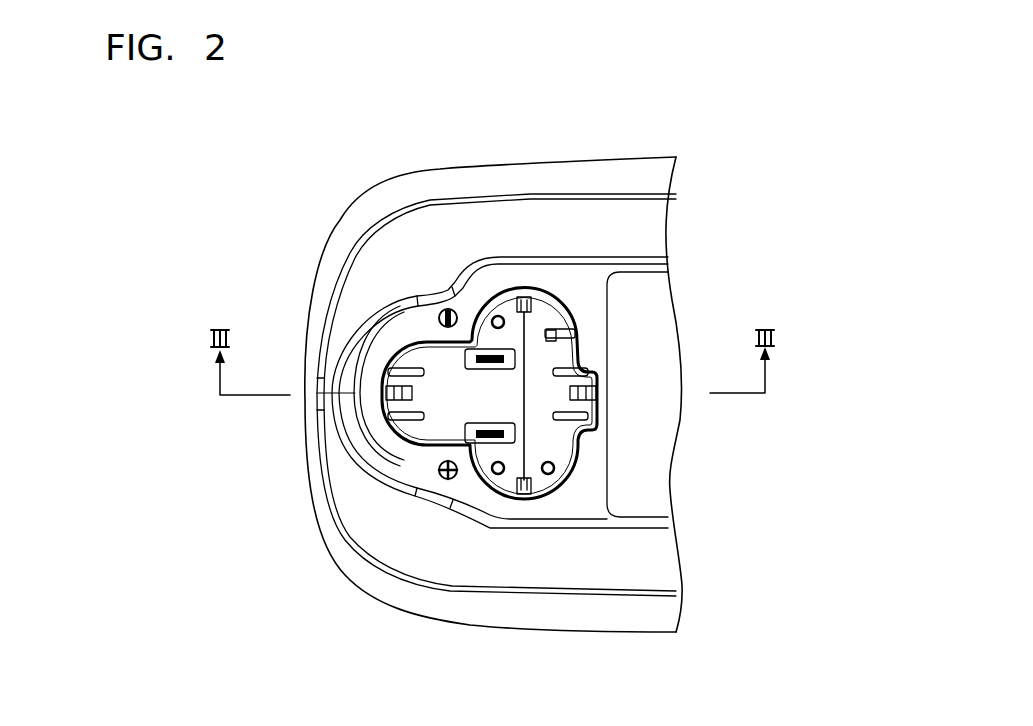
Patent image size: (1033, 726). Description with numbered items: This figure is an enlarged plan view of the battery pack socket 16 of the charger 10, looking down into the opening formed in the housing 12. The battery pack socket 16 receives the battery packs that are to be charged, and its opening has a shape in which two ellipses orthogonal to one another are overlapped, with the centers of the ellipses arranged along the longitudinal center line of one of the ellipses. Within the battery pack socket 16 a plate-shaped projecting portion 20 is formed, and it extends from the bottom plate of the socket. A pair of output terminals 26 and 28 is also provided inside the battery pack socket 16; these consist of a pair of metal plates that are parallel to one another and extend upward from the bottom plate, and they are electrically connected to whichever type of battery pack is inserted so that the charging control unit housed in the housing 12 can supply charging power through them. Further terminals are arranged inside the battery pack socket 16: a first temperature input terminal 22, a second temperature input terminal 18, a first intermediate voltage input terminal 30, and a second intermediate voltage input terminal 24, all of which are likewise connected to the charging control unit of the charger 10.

The charger 10 is at (651, 94).
The housing 12 is at (355, 208).
The battery pack socket 16 is at (447, 345).
The second temperature input terminal 18 is at (545, 293).
The plate-shaped projecting portion 20 is at (562, 327).
The first temperature input terminal 22 is at (586, 374).
The second intermediate voltage input terminal 24 is at (502, 497).
The output terminal 26 is at (487, 440).
The output terminal 28 is at (465, 360).
The first intermediate voltage input terminal 30 is at (468, 421).